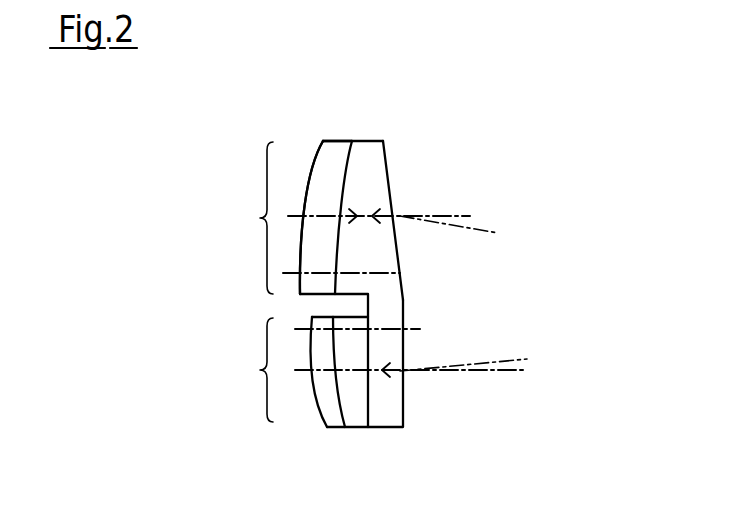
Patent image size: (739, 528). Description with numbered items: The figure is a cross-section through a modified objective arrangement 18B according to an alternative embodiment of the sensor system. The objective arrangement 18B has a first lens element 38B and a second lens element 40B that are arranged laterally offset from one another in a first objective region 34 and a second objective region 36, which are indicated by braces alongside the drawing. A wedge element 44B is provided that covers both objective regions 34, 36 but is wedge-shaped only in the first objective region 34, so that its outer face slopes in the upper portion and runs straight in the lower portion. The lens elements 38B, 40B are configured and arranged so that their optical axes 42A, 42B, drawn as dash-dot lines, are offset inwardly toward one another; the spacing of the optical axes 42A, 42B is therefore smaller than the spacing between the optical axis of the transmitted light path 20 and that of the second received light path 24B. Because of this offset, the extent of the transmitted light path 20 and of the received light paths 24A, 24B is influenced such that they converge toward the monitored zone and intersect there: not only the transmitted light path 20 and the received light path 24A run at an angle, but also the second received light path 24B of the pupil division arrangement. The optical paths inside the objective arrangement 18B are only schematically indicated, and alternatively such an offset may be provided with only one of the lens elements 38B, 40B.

The objective arrangement 18B is at (373, 258).
The transmitted light path 20 is at (323, 182).
The received light path 24A is at (468, 227).
The first lens element 38B is at (330, 147).
The wedge element 44B is at (387, 165).
The second lens element 40B is at (328, 400).
The first objective region 34 is at (253, 218).
The second objective region 36 is at (253, 370).
The optical axis 42A is at (400, 272).
The optical axis 42B is at (412, 329).
The received light path 24B is at (480, 362).